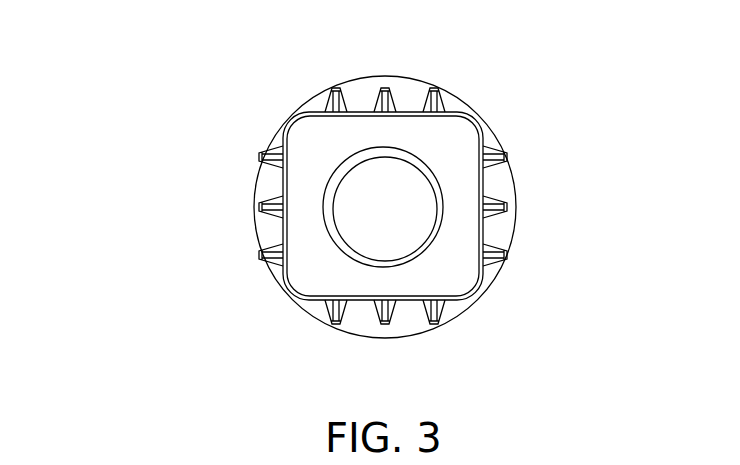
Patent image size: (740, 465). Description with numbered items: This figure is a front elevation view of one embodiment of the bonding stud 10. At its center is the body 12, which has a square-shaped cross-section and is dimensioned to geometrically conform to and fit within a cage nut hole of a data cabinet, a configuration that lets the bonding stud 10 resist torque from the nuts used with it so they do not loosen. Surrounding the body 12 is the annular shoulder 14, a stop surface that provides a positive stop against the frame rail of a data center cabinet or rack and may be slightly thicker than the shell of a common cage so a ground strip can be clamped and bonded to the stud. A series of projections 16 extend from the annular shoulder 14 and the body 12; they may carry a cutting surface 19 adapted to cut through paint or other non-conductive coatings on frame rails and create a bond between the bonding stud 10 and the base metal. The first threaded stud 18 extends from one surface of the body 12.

The bonding stud 10 is at (235, 114).
The body 12 is at (419, 164).
The annular shoulder 14 is at (348, 100).
The projections 16 is at (432, 98).
The first threaded stud 18 is at (403, 230).
The cutting surface 19 is at (512, 195).